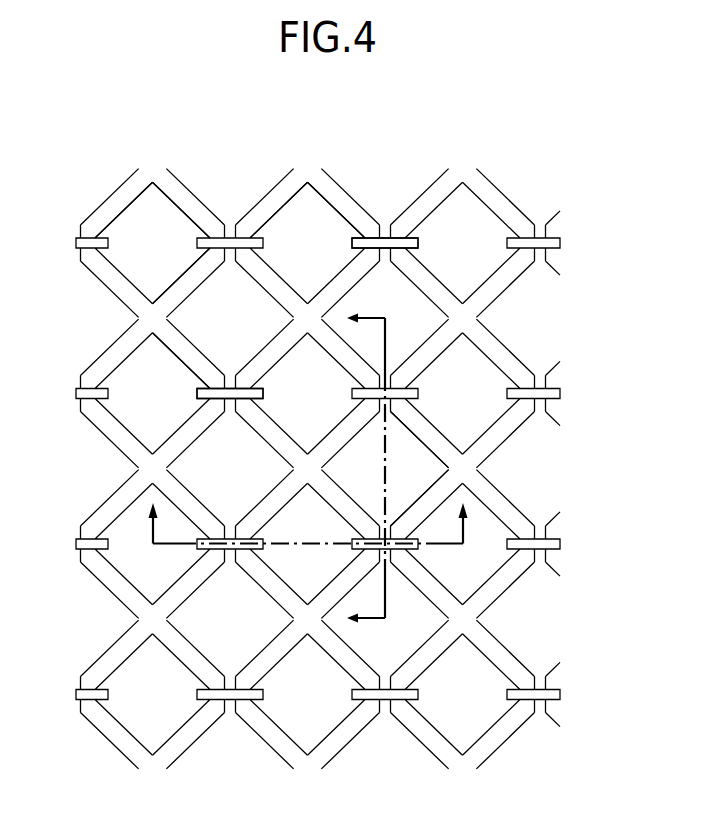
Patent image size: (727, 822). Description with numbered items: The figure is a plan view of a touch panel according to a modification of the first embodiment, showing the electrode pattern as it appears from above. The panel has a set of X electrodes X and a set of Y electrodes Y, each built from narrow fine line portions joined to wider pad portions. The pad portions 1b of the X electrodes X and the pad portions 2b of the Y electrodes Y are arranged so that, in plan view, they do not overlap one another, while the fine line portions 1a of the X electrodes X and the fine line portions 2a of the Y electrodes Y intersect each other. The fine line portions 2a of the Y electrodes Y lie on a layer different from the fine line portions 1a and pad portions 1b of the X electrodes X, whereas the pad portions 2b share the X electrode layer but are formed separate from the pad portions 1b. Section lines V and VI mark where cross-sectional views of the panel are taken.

The fine line portion of X electrode 1a is at (220, 386).
The pad portion of X electrode 1b is at (418, 463).
The fine line portion of Y electrode 2a is at (397, 245).
The pad portion of Y electrode 2b is at (310, 200).
The X electrode X is at (207, 312).
The Y electrode Y is at (155, 202).
The section line V- V is at (307, 531).
The section line VI- VI is at (368, 471).